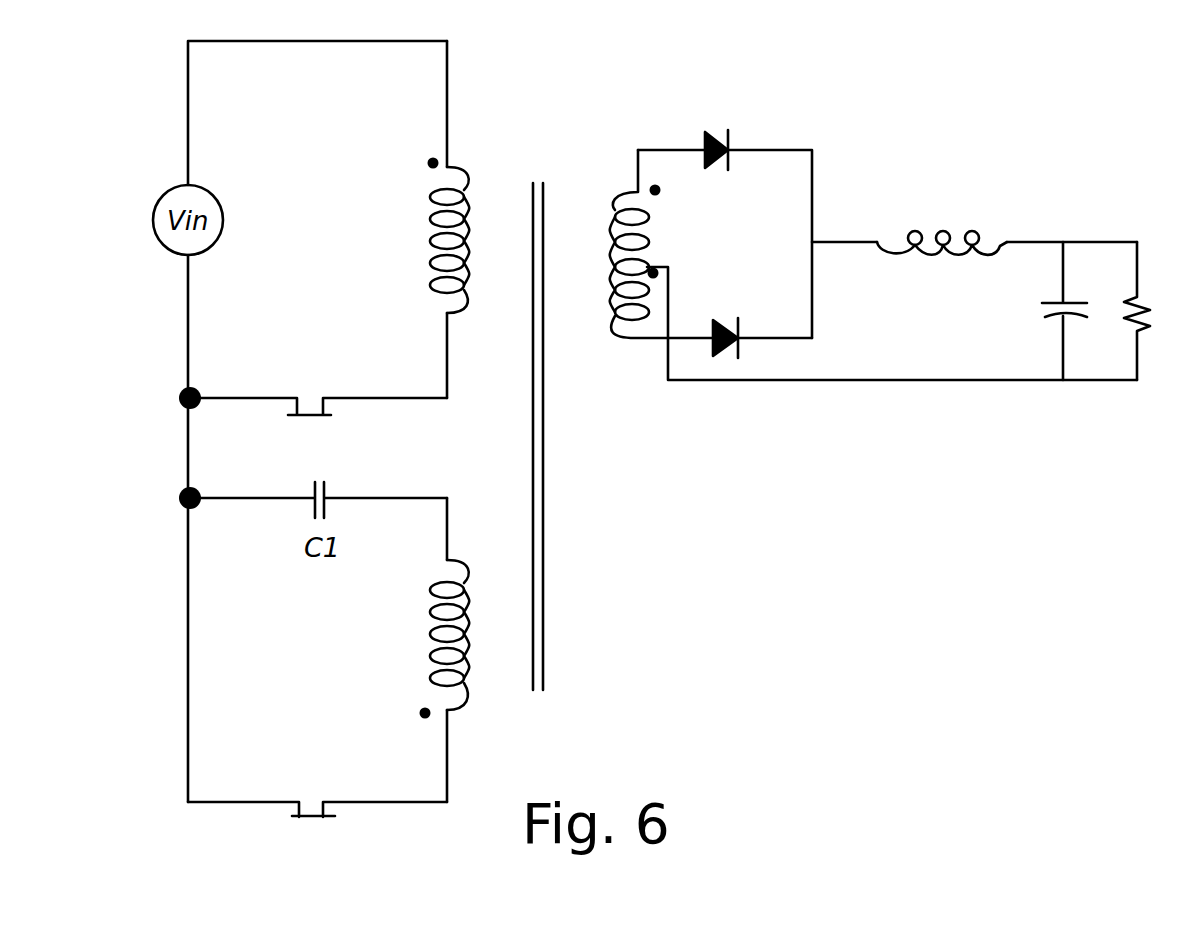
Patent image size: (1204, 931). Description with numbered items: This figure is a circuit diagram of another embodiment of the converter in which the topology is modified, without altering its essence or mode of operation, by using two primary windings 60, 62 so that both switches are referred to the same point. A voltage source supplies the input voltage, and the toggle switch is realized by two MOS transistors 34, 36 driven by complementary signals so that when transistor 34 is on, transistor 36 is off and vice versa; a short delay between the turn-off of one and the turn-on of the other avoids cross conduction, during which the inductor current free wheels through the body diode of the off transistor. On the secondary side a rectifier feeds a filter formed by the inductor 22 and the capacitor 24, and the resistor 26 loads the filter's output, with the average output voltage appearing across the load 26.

The primary winding 60 is at (433, 229).
The primary winding 62 is at (426, 639).
The MOS transistor 34 is at (327, 421).
The MOS transistor 36 is at (305, 822).
The inductor 22 is at (917, 232).
The capacitor 24 is at (1071, 318).
The resistor 26 is at (1145, 300).